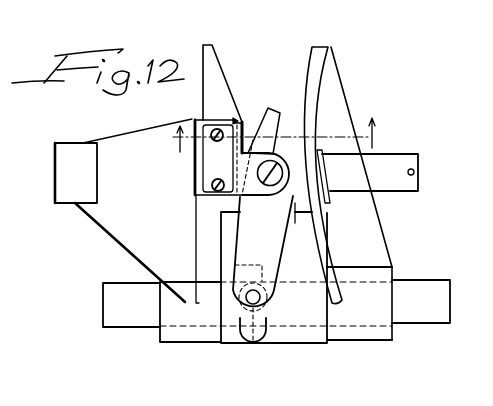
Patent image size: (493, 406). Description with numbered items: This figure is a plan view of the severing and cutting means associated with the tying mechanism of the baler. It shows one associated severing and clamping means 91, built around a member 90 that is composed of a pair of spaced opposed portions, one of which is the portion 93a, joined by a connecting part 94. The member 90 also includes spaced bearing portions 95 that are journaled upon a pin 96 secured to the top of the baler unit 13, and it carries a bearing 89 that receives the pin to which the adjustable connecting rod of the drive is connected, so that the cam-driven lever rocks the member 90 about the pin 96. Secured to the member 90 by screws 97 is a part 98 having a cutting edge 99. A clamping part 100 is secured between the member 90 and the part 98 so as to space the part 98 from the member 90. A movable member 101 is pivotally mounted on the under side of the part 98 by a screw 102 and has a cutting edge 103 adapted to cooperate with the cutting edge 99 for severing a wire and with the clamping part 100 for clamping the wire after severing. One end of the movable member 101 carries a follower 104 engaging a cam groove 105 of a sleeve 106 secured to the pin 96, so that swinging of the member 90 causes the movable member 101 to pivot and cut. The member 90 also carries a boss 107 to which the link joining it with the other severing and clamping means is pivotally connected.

The baler unit 13 is at (277, 135).
The bearing 89 is at (62, 204).
The member 90 is at (137, 240).
The severing and clamping means 91 is at (280, 83).
The spaced opposed portion 93a is at (320, 58).
The connecting part 94 is at (272, 251).
The bearing portions 95 is at (203, 48).
The pin 96 is at (122, 318).
The screws 97 is at (212, 182).
The part 98 is at (223, 198).
The cutting edge 99 is at (249, 129).
The clamping part 100 is at (234, 119).
The movable member 101 is at (280, 121).
The screw 102 is at (277, 198).
The cutting edge 103 is at (277, 113).
The follower 104 is at (256, 344).
The cam groove 105 is at (263, 275).
The sleeve 106 is at (290, 344).
The boss 107 is at (418, 160).